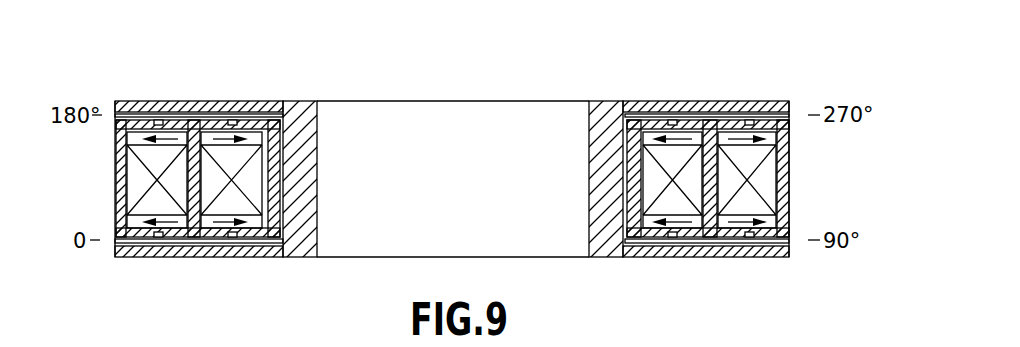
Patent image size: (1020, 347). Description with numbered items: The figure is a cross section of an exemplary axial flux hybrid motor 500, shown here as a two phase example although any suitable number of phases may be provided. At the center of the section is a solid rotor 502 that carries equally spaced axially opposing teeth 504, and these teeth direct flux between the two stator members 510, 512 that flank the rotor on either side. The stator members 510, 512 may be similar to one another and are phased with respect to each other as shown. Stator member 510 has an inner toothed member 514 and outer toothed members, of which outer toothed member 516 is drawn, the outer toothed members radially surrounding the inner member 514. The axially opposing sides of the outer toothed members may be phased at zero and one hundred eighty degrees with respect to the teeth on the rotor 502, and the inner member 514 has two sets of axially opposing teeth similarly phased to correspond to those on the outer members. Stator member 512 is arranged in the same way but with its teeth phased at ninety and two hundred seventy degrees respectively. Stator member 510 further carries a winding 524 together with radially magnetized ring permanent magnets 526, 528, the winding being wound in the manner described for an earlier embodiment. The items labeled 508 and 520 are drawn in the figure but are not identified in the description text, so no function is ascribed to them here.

The axial flux hybrid motor 500 is at (486, 44).
The solid rotor 502 is at (523, 96).
The axially opposing teeth 504 is at (118, 113).
The stator pole block 508 is at (290, 130).
The stator member 510 is at (98, 179).
The stator member 512 is at (798, 186).
The inner toothed member 514 is at (195, 132).
The outer toothed member 516 is at (118, 137).
The lower winding portion 520 is at (175, 225).
The winding 524 is at (155, 158).
The radially magnetized ring permanent magnet 526 is at (273, 130).
The radially magnetized ring permanent magnet 528 is at (173, 136).